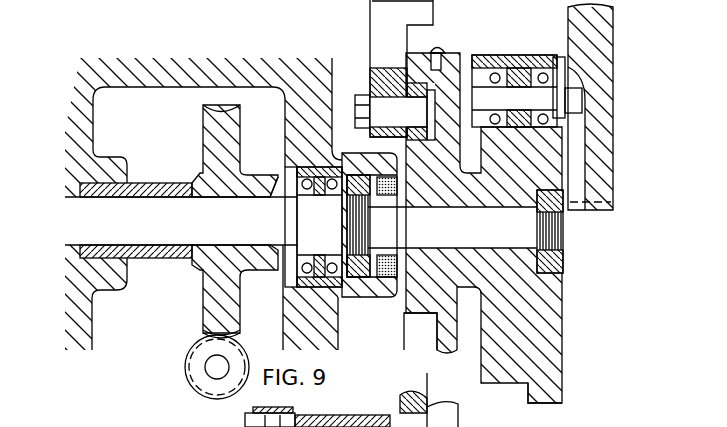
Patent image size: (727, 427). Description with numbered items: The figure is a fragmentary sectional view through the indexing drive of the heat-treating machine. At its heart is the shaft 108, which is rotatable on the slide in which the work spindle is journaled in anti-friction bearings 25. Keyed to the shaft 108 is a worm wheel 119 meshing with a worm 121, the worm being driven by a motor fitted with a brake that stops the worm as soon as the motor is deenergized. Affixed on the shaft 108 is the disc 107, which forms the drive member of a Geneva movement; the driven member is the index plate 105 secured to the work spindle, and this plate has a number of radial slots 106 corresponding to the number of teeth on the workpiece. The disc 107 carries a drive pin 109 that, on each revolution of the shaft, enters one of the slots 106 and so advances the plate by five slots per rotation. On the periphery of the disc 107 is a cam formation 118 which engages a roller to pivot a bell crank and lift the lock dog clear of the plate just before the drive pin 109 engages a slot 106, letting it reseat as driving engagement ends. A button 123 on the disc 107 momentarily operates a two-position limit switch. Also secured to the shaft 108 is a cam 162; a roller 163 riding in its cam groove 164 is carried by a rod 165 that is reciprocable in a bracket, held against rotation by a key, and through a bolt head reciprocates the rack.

The anti-friction bearings 25 is at (333, 413).
The index plate 105 is at (608, 67).
The radial slots 106 is at (577, 208).
The disc 107 is at (553, 313).
The shaft 108 is at (478, 238).
The drive pin 109 is at (559, 97).
The cam formation 118 is at (548, 402).
The worm wheel 119 is at (216, 132).
The worm 121 is at (197, 381).
The button 123 is at (437, 46).
The cam 162 is at (415, 300).
The roller 163 is at (403, 83).
The cam groove 164 is at (462, 58).
The rod 165 is at (380, 14).